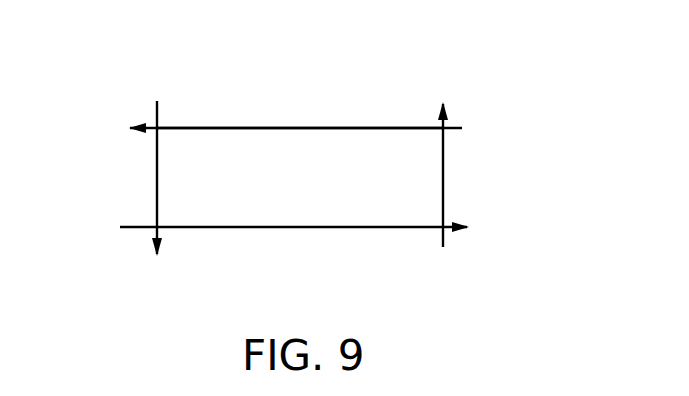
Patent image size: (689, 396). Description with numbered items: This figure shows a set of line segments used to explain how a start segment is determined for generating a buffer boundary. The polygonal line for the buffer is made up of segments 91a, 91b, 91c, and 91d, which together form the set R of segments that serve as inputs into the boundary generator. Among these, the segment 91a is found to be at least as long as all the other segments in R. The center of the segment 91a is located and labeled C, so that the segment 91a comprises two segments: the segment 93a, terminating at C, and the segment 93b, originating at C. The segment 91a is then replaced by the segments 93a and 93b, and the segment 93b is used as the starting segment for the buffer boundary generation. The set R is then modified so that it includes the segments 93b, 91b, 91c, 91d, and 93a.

The segment 91a is at (292, 110).
The segment 91b is at (157, 167).
The segment 91c is at (285, 228).
The segment 91d is at (443, 175).
The segment 93a is at (387, 128).
The segment 93b is at (210, 128).
The center C is at (312, 130).